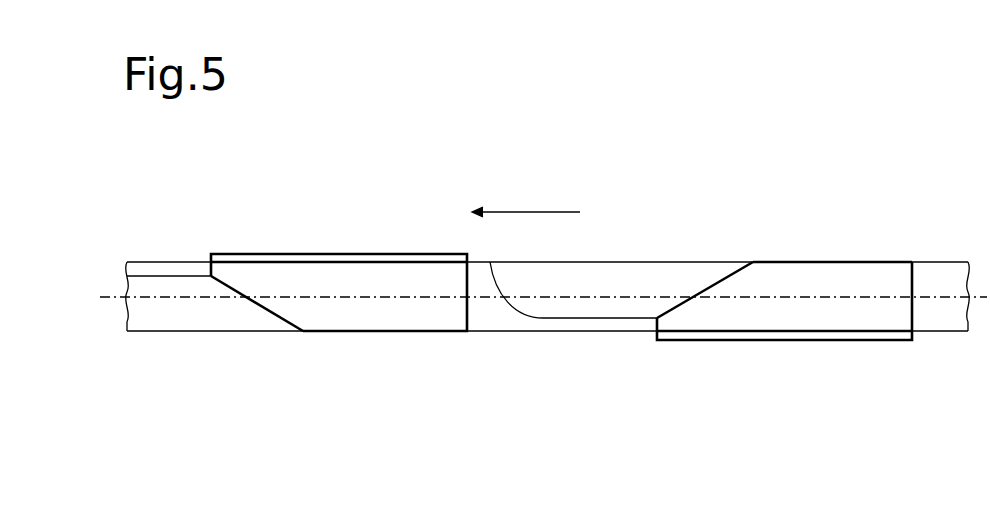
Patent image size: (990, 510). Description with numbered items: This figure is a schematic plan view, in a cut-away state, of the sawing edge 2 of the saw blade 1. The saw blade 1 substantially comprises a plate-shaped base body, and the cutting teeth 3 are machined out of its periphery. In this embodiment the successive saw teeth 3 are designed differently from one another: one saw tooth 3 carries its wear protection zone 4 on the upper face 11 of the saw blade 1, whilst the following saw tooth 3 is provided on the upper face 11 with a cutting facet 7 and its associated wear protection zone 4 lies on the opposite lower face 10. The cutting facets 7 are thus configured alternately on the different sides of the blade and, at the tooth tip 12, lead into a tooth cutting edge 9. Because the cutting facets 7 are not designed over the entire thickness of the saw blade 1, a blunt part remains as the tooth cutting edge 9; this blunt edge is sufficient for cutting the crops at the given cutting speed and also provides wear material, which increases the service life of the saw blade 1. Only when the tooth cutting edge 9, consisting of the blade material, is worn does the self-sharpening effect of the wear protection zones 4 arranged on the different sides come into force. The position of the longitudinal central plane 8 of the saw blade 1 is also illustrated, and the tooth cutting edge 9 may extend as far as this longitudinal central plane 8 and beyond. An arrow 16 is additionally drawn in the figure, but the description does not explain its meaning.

The saw blade 1 is at (610, 207).
The sawing edge 2 is at (497, 342).
The saw tooth 3 is at (861, 242).
The wear protection zone 4 is at (553, 282).
The cutting facet 7 is at (482, 282).
The longitudinal central plane 8 is at (533, 225).
The tooth cutting edge 9 is at (573, 336).
The lower face 10 is at (214, 336).
The upper face 11 is at (168, 207).
The tooth tip 12 is at (784, 364).
The direction arrow 16 is at (526, 185).